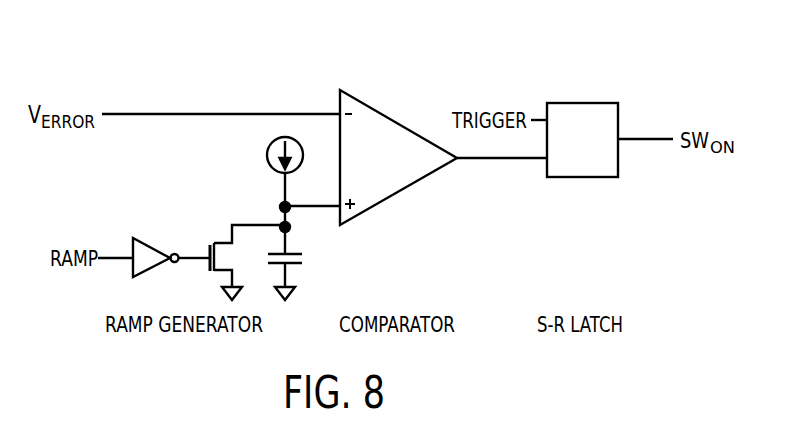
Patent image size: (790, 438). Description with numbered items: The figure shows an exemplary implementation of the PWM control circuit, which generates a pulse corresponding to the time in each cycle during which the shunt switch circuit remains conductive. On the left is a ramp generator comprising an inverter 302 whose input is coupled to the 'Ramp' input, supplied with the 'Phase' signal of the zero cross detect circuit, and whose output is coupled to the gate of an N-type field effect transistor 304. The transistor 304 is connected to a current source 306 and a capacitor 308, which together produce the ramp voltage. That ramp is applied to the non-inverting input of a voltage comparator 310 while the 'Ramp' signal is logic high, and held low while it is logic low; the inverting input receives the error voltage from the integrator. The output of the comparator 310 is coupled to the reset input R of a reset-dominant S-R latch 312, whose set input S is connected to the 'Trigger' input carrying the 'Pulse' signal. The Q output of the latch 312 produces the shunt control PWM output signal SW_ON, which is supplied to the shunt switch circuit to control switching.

The inverter 302 is at (152, 240).
The N-type field effect transistor 304 is at (207, 268).
The current source 306 is at (268, 162).
The capacitor 308 is at (294, 264).
The voltage comparator 310 is at (397, 118).
The reset-dominant S-R latch 312 is at (587, 103).